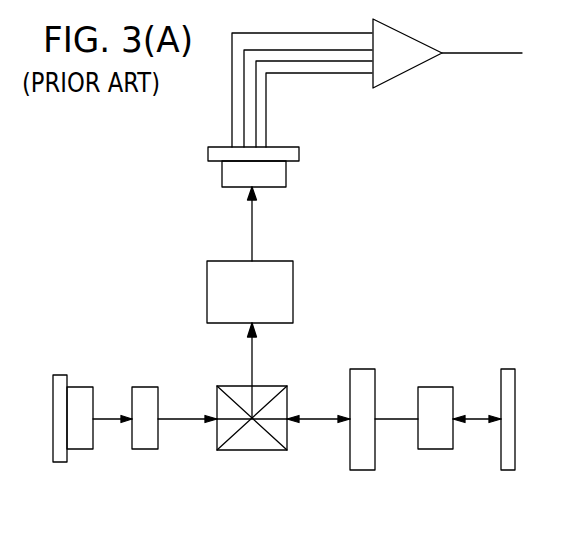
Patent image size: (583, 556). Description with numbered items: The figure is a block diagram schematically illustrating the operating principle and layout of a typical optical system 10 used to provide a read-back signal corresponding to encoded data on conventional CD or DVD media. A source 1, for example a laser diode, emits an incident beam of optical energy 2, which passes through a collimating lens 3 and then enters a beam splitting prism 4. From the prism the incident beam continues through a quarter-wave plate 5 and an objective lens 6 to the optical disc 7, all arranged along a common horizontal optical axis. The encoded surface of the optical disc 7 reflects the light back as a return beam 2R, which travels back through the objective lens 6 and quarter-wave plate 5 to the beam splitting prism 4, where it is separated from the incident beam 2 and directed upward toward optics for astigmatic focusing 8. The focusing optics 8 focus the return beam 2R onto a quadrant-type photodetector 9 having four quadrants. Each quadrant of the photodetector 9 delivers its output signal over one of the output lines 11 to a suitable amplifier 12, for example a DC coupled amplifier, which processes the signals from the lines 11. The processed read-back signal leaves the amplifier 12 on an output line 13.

The source of an incident beam of optical energy 1 is at (80, 457).
The incident beam of optical energy 2 is at (110, 425).
The return beam 2R is at (257, 220).
The collimating lens 3 is at (147, 457).
The beam splitting prism 4 is at (247, 452).
The quarter-wave plate 5 is at (363, 473).
The objective lens 6 is at (435, 457).
The optical disc 7 is at (507, 473).
The optics for astigmatic focusing 8 is at (300, 290).
The quadrant-type photodetector 9 is at (288, 168).
The optical system 10 is at (165, 198).
The output lines 11 is at (272, 98).
The amplifier 12 is at (398, 75).
The output line 13 is at (473, 57).